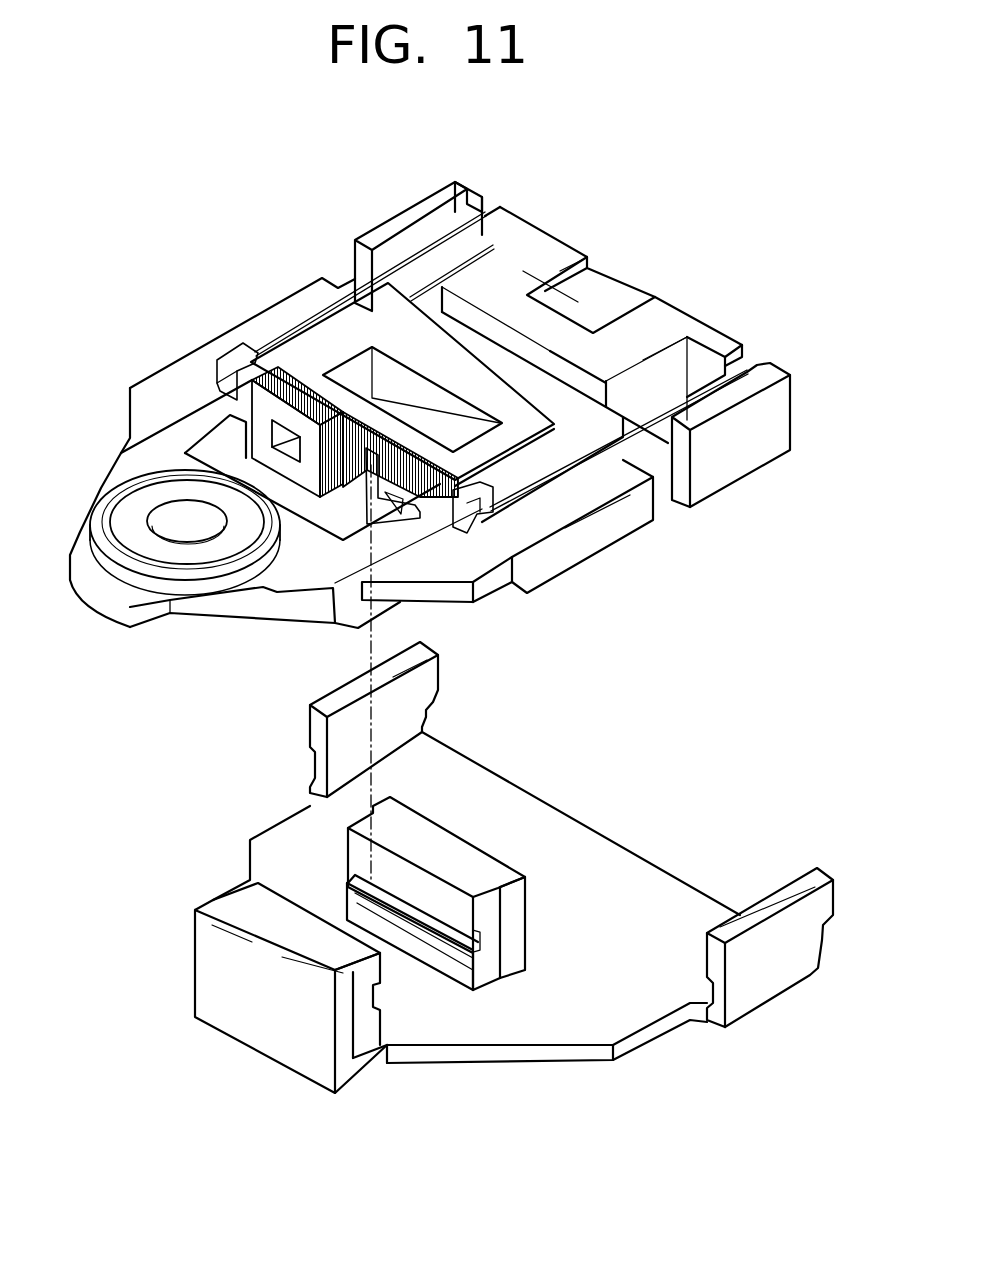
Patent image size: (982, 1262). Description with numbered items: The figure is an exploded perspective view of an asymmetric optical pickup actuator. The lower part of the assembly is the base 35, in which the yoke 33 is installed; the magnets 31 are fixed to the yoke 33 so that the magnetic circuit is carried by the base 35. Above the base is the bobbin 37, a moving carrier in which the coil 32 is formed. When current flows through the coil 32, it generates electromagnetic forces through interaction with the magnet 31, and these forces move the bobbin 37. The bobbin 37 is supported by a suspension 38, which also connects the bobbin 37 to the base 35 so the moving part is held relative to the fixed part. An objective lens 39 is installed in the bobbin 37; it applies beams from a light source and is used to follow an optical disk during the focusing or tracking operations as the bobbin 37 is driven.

The magnet 31 is at (420, 852).
The coil 32 is at (268, 382).
The yoke 33 is at (497, 865).
The base 35 is at (780, 898).
The bobbin 37 is at (240, 318).
The suspension 38 is at (347, 287).
The objective lens 39 is at (165, 518).